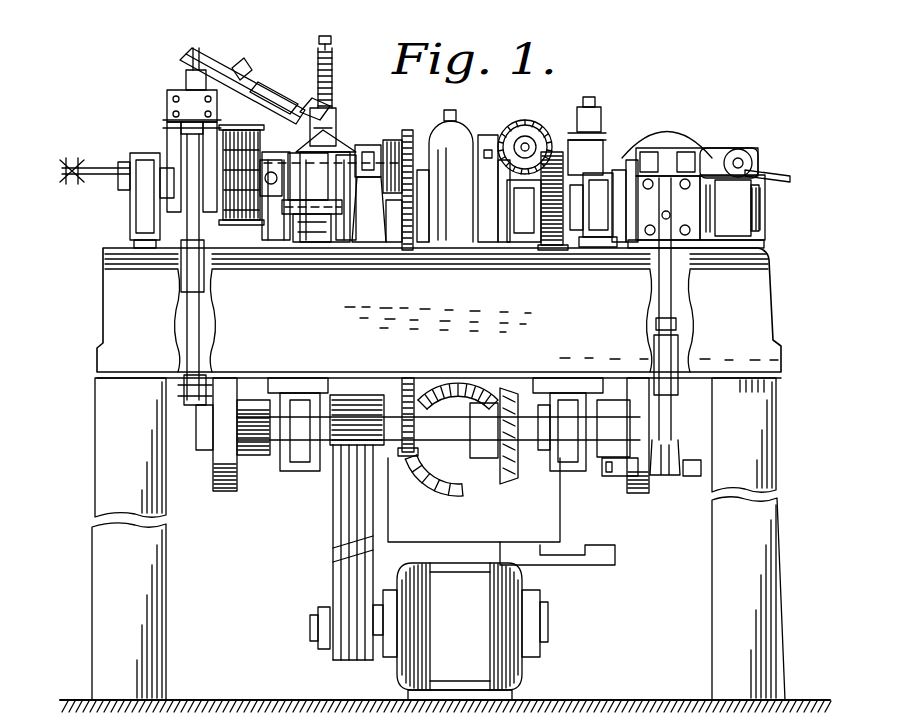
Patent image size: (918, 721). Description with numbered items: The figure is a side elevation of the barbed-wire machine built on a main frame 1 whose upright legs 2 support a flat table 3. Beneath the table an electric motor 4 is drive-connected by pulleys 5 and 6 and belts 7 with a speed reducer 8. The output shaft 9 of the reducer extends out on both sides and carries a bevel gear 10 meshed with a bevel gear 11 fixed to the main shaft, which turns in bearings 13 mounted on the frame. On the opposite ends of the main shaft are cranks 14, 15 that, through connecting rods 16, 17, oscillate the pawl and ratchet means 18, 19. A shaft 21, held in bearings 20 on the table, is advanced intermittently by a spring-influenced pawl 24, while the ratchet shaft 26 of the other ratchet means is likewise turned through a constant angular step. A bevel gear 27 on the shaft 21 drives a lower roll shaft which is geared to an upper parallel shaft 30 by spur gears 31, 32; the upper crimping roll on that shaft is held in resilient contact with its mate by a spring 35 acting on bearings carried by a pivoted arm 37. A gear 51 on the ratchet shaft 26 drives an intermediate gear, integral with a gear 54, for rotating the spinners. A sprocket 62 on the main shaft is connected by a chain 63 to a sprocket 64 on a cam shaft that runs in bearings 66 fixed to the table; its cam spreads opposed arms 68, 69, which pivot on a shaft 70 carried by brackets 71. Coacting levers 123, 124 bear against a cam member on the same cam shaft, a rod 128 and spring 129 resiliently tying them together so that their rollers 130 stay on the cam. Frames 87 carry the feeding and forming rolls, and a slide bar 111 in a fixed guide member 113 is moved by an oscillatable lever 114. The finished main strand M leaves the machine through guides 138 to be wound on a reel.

The main frame 1 is at (100, 292).
The upright supports or legs 2 is at (155, 610).
The flat top or table 3 is at (152, 256).
The electric motor 4 is at (465, 631).
The pulley 5 is at (322, 606).
The pulley 6 is at (334, 531).
The belts 7 is at (350, 572).
The speed reducer or reduction gear box 8 is at (501, 511).
The output shaft 9 is at (444, 470).
The bevel gear 10 is at (470, 472).
The bevel gear 11 is at (514, 470).
The bearings 13 is at (300, 452).
The crank 14 is at (660, 442).
The crank 15 is at (216, 431).
The connecting rod 16 is at (673, 416).
The connecting rod 17 is at (186, 333).
The pawl and ratchet means 18 is at (672, 232).
The pawl and ratchet means 19 is at (166, 134).
The bearings 20 is at (596, 247).
The shaft 21 is at (620, 247).
The spring-influenced pawl 24 is at (668, 150).
The ratchet shaft 26 is at (132, 192).
The bevel gear 27 is at (556, 248).
The upper shaft 30 is at (525, 122).
The spur gear 31 is at (516, 246).
The spur gear 32 is at (556, 150).
The spring 35 is at (598, 166).
The pivoted arm 37 is at (594, 106).
The gear 51 is at (244, 200).
The gear 54 is at (242, 136).
The sprocket 62 is at (407, 455).
The chain 63 is at (408, 250).
The sprocket 64 is at (410, 134).
The bearings 66 is at (453, 122).
The arm 68 is at (346, 142).
The arm 69 is at (286, 246).
The shaft 70 is at (376, 208).
The brackets 71 is at (264, 242).
The frames 87 is at (318, 84).
The slide bar 111 is at (248, 84).
The fixed guide member 113 is at (283, 88).
The oscillatable lever 114 is at (233, 50).
The lever 123 is at (340, 114).
The lever 124 is at (303, 246).
The rod 128 is at (334, 42).
The spring 129 is at (336, 80).
The rollers 130 is at (314, 246).
The guides 138 is at (118, 167).
The main strand M is at (766, 176).